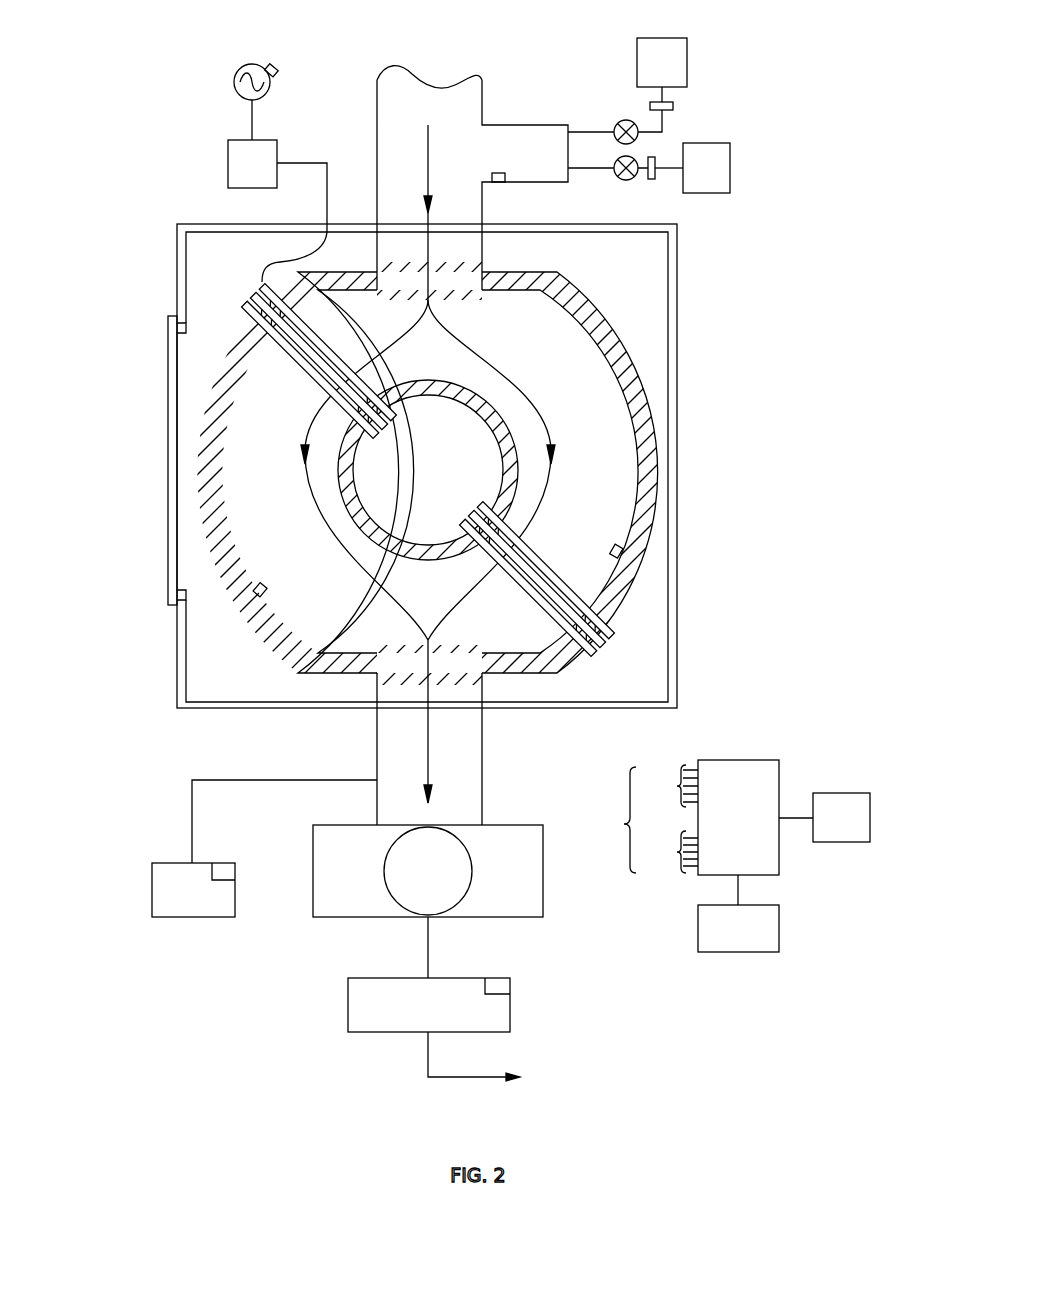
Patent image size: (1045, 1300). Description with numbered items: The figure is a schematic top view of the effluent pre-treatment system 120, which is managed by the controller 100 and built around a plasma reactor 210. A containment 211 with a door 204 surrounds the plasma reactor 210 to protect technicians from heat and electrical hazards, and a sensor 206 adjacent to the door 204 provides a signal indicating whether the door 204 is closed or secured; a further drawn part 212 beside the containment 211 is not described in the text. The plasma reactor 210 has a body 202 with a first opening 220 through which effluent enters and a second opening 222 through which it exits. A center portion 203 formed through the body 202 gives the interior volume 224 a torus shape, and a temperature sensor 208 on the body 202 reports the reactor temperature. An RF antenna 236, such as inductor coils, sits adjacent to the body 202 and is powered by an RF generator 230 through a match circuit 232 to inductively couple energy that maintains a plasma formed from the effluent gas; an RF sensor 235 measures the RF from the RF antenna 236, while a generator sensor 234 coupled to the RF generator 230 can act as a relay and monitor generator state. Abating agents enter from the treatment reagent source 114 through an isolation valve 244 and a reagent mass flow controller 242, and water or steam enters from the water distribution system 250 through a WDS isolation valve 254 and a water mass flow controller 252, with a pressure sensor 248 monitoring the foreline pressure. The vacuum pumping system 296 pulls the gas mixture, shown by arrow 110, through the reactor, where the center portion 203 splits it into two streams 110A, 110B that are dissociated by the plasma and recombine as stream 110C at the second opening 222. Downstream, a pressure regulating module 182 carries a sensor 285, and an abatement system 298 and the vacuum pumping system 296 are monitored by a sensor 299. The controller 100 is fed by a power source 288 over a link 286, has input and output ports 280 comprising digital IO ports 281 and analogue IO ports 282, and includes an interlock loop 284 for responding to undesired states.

The controller 100 is at (721, 820).
The flow 110 is at (430, 157).
The first stream 110A is at (308, 428).
The second stream 110B is at (548, 422).
The recombined stream 110C is at (428, 740).
The treatment reagent source 114 is at (689, 179).
The effluent pre-treatment system 120 is at (747, 345).
The pressure regulating module 182 is at (176, 902).
The body 202 is at (216, 382).
The center portion 203 is at (411, 481).
The door 204 is at (170, 446).
The sensor 206 is at (178, 588).
The temperature sensor 208 is at (265, 585).
The plasma reactor 210 is at (660, 445).
The containment 211 is at (175, 253).
The enclosure inner wall 212 is at (678, 391).
The first opening 220 is at (402, 280).
The second opening 222 is at (398, 662).
The interior volume 224 is at (296, 611).
The RF generator 230 is at (252, 64).
The match circuit 232 is at (235, 177).
The generator sensor 234 is at (278, 63).
The RF sensor 235 is at (612, 547).
The RF antenna 236 is at (256, 292).
The reagent mass flow controller 242 is at (652, 180).
The isolation valve 244 is at (628, 180).
The pressure sensor 248 is at (498, 183).
The water distribution system 250 is at (645, 74).
The water mass flow controller 252 is at (673, 108).
The WDS isolation valve 254 is at (626, 120).
The input and output ports 280 is at (623, 824).
The digital IO ports 281 is at (676, 784).
The analogue IO ports 282 is at (676, 851).
The interlock loop 284 is at (721, 940).
The sensor 285 is at (225, 868).
The link 286 is at (794, 812).
The power source 288 is at (824, 830).
The vacuum pumping system 296 is at (330, 870).
The abatement system 298 is at (411, 1012).
The sensor 299 is at (498, 987).